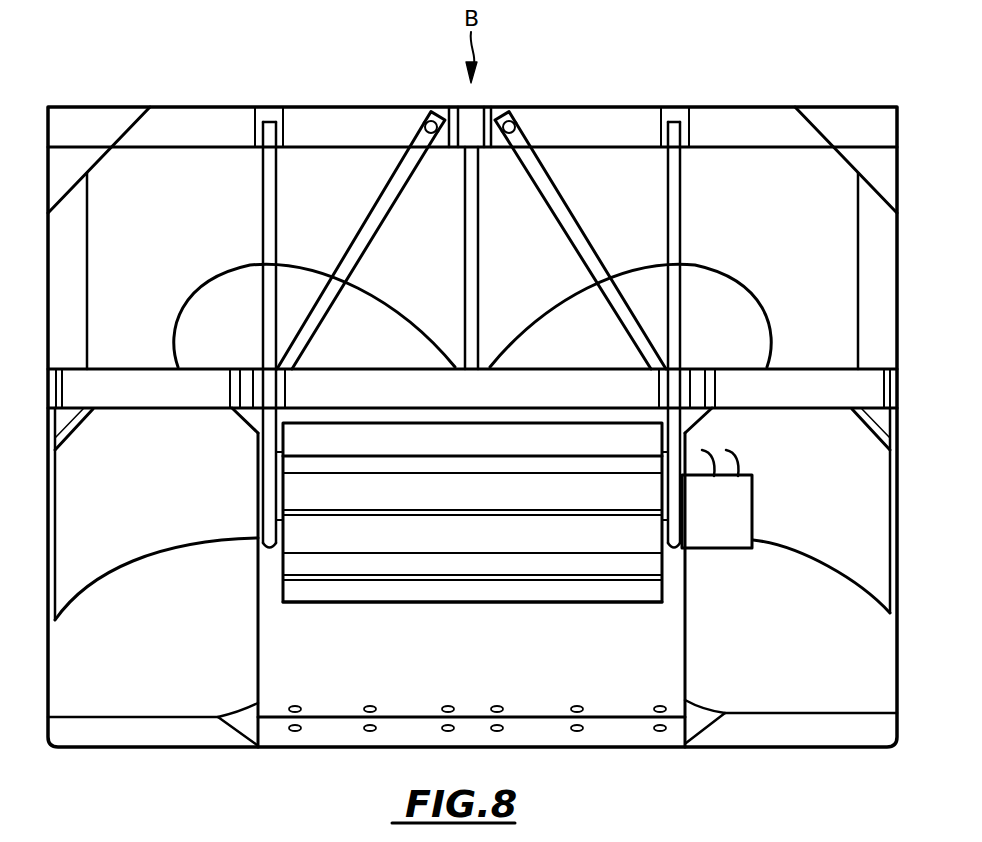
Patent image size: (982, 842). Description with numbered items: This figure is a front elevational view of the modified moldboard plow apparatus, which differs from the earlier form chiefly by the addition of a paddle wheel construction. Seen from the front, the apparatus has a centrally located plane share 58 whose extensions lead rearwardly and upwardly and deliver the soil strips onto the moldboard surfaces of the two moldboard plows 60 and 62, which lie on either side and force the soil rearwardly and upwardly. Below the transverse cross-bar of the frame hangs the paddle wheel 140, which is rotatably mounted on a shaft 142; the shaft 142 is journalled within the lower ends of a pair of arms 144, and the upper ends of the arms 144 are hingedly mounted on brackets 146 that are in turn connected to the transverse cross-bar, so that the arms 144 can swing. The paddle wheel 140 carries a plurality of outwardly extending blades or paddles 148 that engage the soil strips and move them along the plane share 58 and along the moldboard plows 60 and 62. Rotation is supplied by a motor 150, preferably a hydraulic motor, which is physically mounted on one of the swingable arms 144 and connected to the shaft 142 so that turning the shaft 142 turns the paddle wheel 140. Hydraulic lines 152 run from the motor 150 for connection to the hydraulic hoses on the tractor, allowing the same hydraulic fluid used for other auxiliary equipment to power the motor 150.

The plane share 58 is at (687, 668).
The moldboard plow 60 is at (762, 288).
The moldboard plow 62 is at (190, 285).
The paddle wheel 140 is at (302, 545).
The shaft 142 is at (283, 510).
The arm 144 is at (273, 215).
The bracket 146 is at (266, 106).
The paddle 148 is at (628, 590).
The motor 150 is at (735, 522).
The hydraulic lines 152 is at (745, 456).